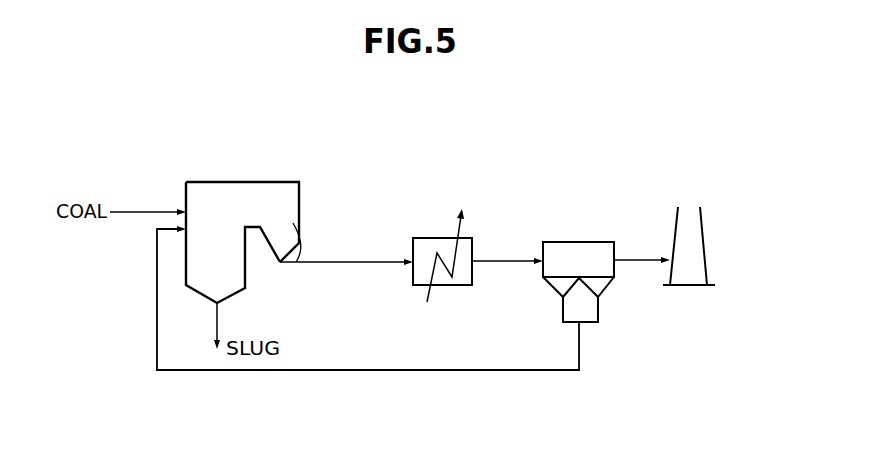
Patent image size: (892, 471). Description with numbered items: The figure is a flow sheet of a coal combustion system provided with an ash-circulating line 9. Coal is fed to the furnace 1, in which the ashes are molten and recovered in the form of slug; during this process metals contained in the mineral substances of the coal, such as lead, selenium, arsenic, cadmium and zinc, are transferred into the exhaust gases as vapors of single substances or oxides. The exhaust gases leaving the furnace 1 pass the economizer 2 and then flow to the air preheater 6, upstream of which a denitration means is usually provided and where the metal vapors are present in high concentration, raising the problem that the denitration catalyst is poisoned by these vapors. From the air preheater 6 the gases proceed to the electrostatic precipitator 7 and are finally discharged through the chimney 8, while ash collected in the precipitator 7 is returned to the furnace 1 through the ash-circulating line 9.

The furnace 1 is at (212, 182).
The economizer 2 is at (296, 262).
The air preheater 6 is at (420, 238).
The electrostatic precipitator 7 is at (543, 242).
The chimney 8 is at (698, 214).
The ash-circulating line 9 is at (402, 372).